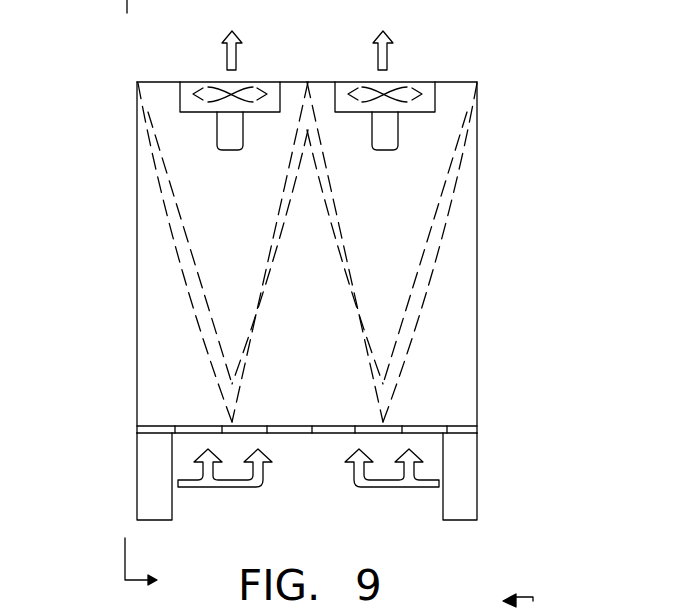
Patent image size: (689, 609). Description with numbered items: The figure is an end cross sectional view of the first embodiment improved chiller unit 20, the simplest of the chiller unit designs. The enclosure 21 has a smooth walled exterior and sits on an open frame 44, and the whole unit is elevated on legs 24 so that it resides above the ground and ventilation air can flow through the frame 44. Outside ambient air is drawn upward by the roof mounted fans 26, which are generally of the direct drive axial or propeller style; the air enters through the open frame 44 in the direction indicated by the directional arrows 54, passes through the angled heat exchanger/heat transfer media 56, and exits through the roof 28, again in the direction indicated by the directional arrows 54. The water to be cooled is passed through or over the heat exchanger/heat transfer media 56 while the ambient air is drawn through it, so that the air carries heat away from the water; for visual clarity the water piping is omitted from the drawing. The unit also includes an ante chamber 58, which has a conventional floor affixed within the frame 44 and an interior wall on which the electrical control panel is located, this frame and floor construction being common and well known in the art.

The improved chiller unit 20 is at (556, 284).
The enclosure 21 is at (137, 253).
The legs 24 is at (137, 477).
The roof mounted fans 26 is at (424, 82).
The roof 28 is at (155, 81).
The open frame 44 is at (428, 426).
The directional arrows 54 is at (403, 487).
The heat exchanger/heat transfer media 56 is at (453, 203).
The ante chamber 58 is at (223, 57).